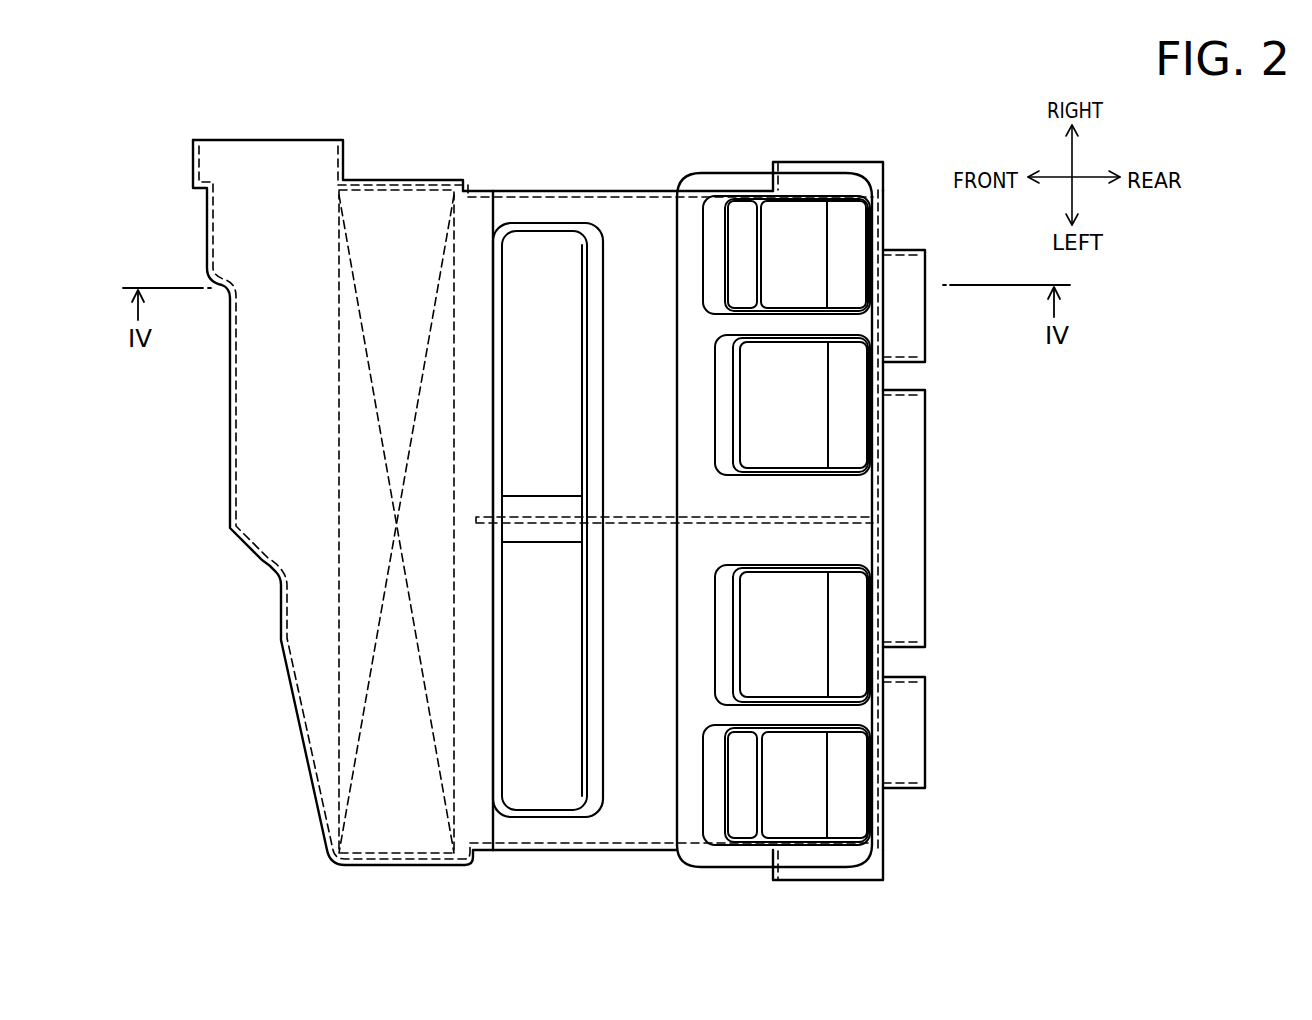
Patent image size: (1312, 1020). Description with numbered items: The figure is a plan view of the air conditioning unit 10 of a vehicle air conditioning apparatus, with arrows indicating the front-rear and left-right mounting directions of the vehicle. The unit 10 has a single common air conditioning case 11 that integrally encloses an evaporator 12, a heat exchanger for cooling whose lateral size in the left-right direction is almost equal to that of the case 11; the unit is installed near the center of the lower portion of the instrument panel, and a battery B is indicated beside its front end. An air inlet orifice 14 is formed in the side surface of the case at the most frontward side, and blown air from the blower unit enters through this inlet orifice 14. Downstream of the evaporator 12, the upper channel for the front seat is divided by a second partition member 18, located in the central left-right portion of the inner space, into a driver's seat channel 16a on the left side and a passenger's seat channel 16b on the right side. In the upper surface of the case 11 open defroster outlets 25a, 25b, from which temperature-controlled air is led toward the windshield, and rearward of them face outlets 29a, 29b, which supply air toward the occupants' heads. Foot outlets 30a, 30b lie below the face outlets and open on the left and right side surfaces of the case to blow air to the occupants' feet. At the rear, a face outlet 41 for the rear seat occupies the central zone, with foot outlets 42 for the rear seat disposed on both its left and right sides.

The battery B is at (262, 165).
The air conditioning unit 10 is at (573, 189).
The air conditioning case 11 is at (533, 191).
The evaporator 12 is at (398, 187).
The air inlet orifice 14 is at (295, 140).
The driver's seat channel 16a is at (475, 730).
The passenger's seat channel 16b is at (485, 298).
The second partition member 18 is at (795, 517).
The defroster outlet 25a is at (548, 798).
The defroster outlet 25b is at (557, 272).
The face outlet 29a is at (847, 668).
The face outlet 29b is at (795, 255).
The foot outlet 30a is at (853, 880).
The foot outlet 30b is at (797, 162).
The face outlet for the rear seat 41 is at (925, 617).
The foot outlet for the rear seat 42 is at (925, 328).